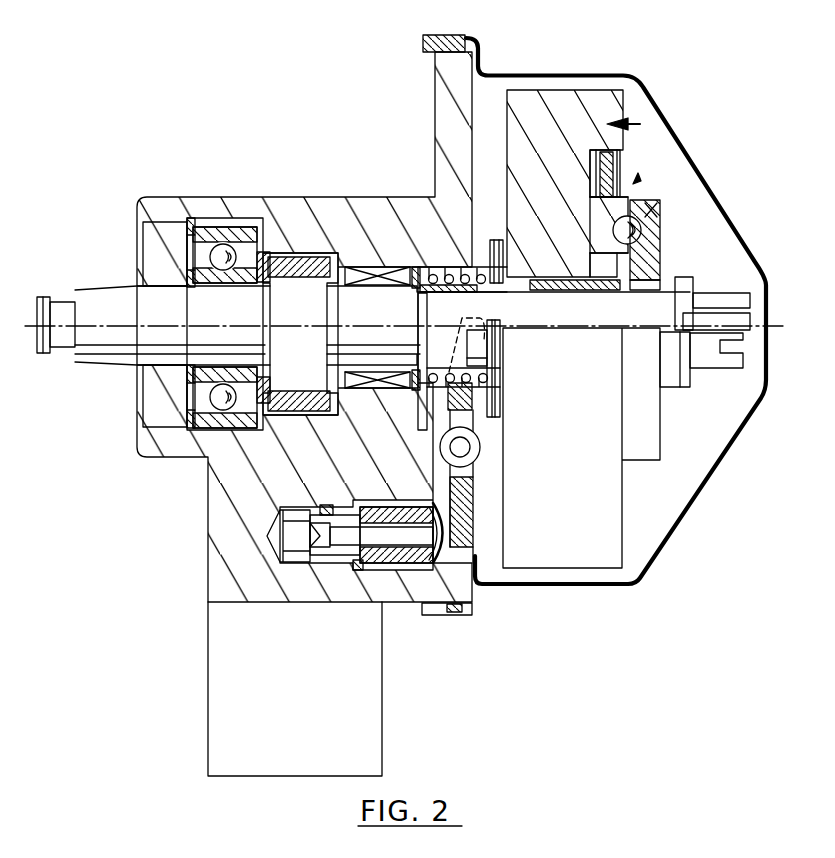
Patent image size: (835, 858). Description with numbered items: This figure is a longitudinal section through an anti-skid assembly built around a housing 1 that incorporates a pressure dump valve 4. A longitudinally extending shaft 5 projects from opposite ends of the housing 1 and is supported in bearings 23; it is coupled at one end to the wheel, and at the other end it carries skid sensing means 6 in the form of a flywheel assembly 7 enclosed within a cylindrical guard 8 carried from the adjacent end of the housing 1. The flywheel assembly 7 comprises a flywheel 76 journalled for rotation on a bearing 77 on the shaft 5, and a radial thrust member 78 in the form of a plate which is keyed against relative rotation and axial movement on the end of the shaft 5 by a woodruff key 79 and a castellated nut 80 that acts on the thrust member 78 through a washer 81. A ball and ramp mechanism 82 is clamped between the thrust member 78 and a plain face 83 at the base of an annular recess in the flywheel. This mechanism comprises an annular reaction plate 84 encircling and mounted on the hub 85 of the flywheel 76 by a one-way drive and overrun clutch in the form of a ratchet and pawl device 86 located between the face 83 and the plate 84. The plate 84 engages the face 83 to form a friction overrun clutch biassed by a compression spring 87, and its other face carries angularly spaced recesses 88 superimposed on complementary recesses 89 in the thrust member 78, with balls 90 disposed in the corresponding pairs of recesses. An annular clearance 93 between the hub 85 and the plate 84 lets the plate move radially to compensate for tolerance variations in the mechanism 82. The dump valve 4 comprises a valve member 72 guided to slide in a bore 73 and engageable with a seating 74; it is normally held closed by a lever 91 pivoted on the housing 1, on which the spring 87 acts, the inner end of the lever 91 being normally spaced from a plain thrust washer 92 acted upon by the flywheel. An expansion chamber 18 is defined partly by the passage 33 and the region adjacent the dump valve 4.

The housing 1 is at (368, 208).
The pressure dump valve 4 is at (382, 603).
The shaft 5 is at (125, 296).
The skid sensing means 6 is at (628, 124).
The flywheel assembly 7 is at (523, 100).
The cylindrical guard 8 is at (687, 160).
The expansion chamber 18 is at (378, 578).
The ball bearings 23 is at (327, 230).
The passage 33 is at (290, 548).
The valve member 72 is at (463, 546).
The bore 73 is at (362, 492).
The seating 74 is at (320, 528).
The flywheel 76 is at (548, 540).
The bearing 77 is at (480, 330).
The radial thrust member 78 is at (648, 211).
The woodruff key 79 is at (563, 337).
The constellated nut 80 is at (733, 366).
The washer 81 is at (682, 380).
The ball and ramp mechanism 82 is at (602, 180).
The plain face 83 is at (563, 195).
The reaction plate 84 is at (606, 148).
The hub 85 is at (501, 372).
The ratchet and pawl device 86 is at (602, 172).
The compression spring 87 is at (432, 266).
The recesses 88 is at (620, 205).
The complementary recesses 89 is at (644, 231).
The balls 90 is at (616, 230).
The lever 91 is at (475, 548).
The plain thrust washer 92 is at (437, 122).
The annular clearance 93 is at (618, 256).